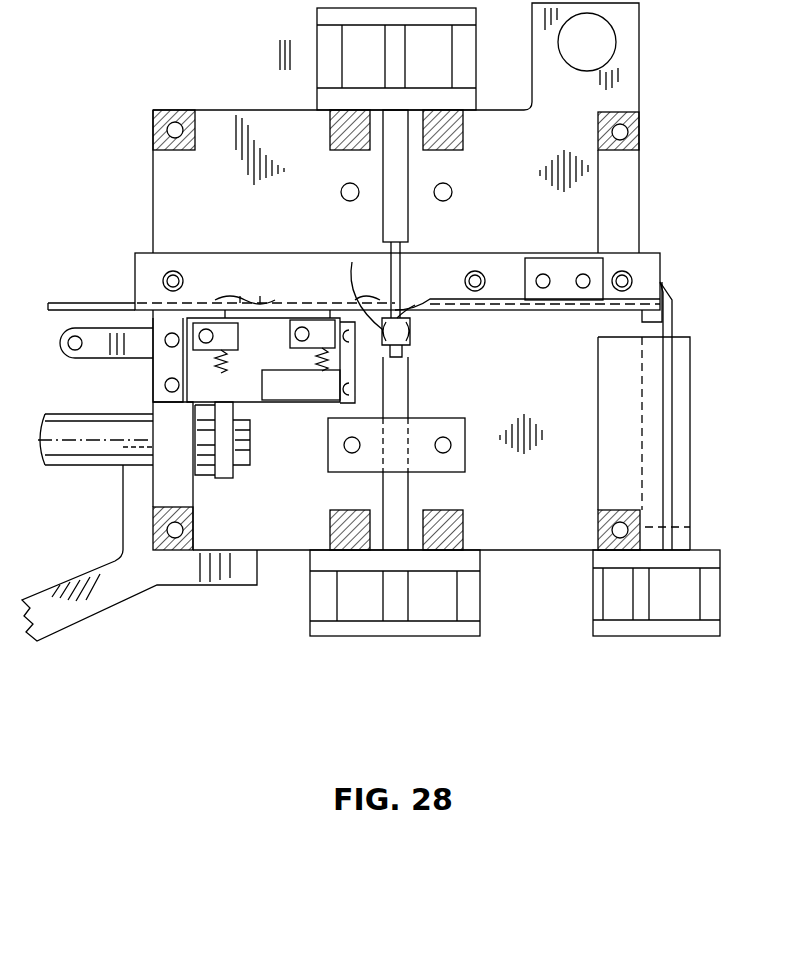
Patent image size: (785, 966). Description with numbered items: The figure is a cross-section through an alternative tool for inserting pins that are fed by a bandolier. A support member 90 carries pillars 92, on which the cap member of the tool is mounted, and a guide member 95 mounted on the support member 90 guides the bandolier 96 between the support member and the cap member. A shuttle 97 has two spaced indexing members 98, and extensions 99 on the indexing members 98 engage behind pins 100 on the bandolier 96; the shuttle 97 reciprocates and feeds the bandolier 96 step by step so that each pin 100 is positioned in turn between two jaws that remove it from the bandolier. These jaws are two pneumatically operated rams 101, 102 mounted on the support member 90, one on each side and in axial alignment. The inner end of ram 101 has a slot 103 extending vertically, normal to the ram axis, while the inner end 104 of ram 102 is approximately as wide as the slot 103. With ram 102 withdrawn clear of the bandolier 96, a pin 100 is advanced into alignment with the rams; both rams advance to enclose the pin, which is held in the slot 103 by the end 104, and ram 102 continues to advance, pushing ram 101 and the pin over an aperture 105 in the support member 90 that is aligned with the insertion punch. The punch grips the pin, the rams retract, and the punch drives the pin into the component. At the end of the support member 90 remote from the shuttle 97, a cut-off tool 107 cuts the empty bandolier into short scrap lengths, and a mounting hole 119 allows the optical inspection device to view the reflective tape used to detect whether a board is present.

The support member 90 is at (540, 376).
The pillars 92 is at (598, 528).
The guide member 95 is at (655, 258).
The bandolier 96 is at (98, 302).
The shuttle 97 is at (100, 352).
The indexing members 98 is at (317, 342).
The extensions 99 is at (330, 316).
The pins 100 is at (262, 298).
The ram 101 is at (397, 503).
The ram 102 is at (400, 162).
The slot 103 is at (405, 349).
The inner end 104 is at (397, 317).
The aperture 105 is at (352, 262).
The cut-off tool 107 is at (668, 298).
The mounting hole 119 is at (604, 40).